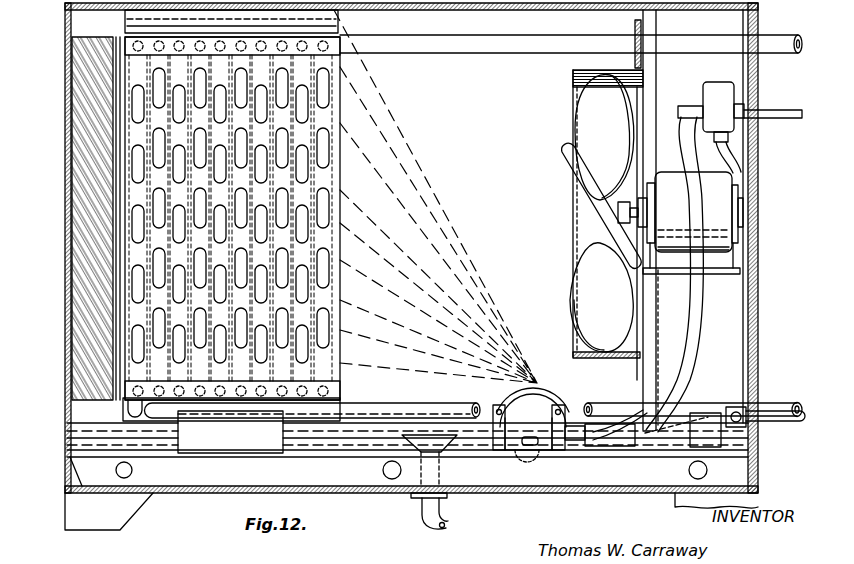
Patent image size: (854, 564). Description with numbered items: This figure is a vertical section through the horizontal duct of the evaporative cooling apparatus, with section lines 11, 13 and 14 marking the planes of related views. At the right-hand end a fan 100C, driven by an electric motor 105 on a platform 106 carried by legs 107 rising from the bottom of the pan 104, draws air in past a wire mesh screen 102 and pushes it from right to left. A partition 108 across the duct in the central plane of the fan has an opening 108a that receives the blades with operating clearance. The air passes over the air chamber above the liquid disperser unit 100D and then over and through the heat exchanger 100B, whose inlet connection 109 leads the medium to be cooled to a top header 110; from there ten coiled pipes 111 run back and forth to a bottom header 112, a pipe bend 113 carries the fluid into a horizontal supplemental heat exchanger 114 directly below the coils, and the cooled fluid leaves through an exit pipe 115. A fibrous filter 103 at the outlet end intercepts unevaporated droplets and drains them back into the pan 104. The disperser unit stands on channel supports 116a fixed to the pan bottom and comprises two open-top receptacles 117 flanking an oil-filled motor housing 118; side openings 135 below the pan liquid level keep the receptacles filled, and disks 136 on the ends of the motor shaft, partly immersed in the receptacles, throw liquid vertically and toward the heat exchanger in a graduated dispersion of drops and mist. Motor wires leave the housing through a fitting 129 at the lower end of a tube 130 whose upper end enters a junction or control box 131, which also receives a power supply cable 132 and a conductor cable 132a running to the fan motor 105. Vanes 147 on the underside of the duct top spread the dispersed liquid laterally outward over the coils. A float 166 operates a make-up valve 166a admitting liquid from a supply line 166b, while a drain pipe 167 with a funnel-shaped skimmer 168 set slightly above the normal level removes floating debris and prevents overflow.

The section line of Figure 11 is at (62, 47).
The section line of Figure 13 is at (461, 12).
The section line of Figure 14 is at (472, 12).
The heat exchanger 100B is at (342, 99).
The fan 100C is at (556, 136).
The liquid disperser unit 100D is at (550, 372).
The screen 102 is at (736, 173).
The filter 103 is at (82, 74).
The pan 104 is at (92, 432).
The electric motor 105 is at (634, 178).
The platform 106 is at (715, 276).
The legs 107 is at (728, 337).
The partition 108 is at (640, 22).
The opening 108a is at (645, 84).
The inlet connection 109 is at (790, 55).
The top header 110 is at (148, 54).
The pipes 111 is at (182, 245).
The bottom header 112 is at (126, 396).
The pipe bend 113 is at (127, 406).
The supplemental heat exchanger 114 is at (148, 421).
The exit pipe 115 is at (382, 410).
The channel supports 116a is at (530, 478).
The receptacles 117 is at (520, 446).
The motor housing 118 is at (553, 420).
The fitting 129 is at (588, 460).
The tube 130 is at (686, 345).
The junction or control box 131 is at (712, 95).
The power supply cable 132 is at (773, 129).
The conductor cable 132a is at (746, 182).
The side openings 135 is at (543, 452).
The disks 136 is at (557, 404).
The vanes 147 is at (336, 20).
The float 166 is at (624, 450).
The float controlled make-up valve 166a is at (750, 441).
The supply line 166b is at (790, 423).
The drain pipe 167 is at (425, 508).
The funnel-shaped skimmer 168 is at (441, 442).